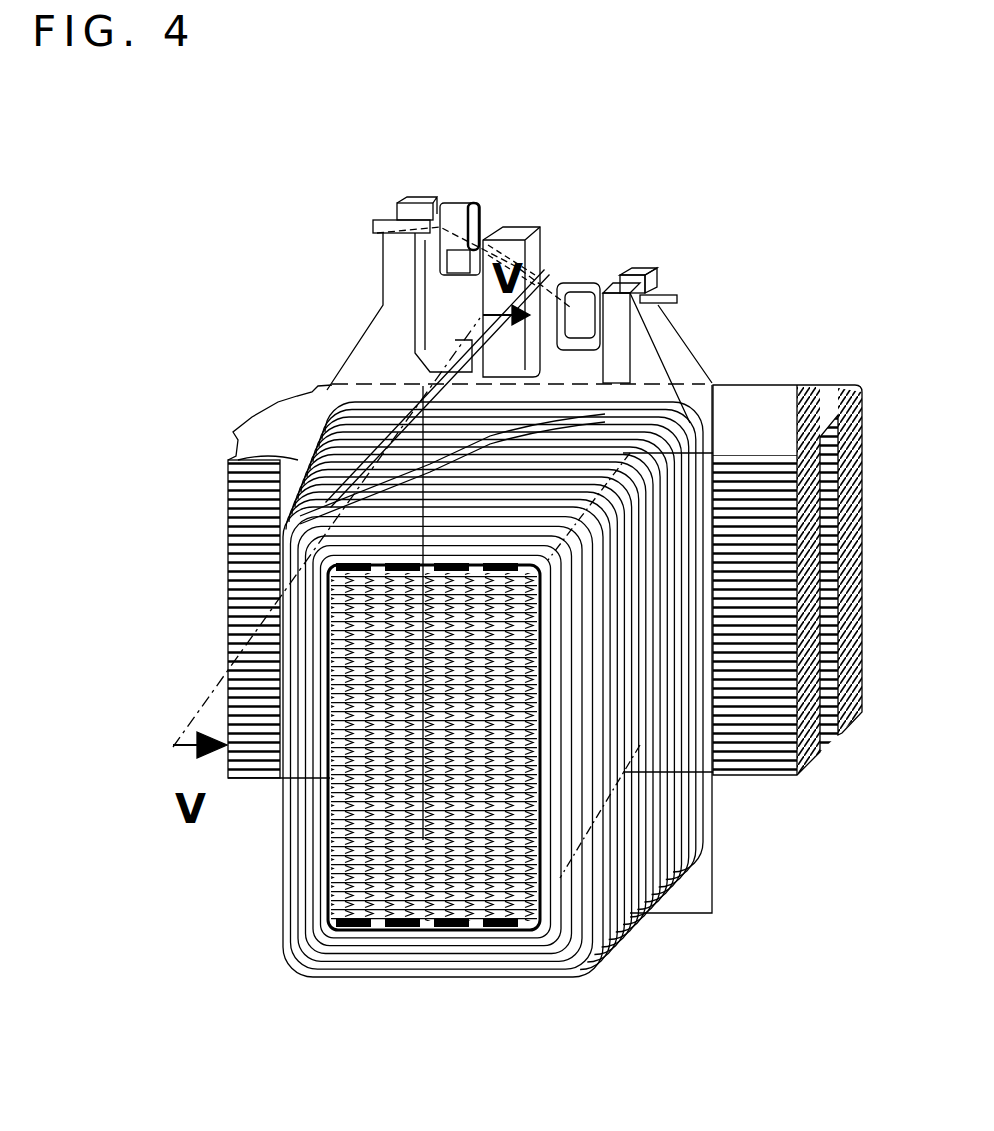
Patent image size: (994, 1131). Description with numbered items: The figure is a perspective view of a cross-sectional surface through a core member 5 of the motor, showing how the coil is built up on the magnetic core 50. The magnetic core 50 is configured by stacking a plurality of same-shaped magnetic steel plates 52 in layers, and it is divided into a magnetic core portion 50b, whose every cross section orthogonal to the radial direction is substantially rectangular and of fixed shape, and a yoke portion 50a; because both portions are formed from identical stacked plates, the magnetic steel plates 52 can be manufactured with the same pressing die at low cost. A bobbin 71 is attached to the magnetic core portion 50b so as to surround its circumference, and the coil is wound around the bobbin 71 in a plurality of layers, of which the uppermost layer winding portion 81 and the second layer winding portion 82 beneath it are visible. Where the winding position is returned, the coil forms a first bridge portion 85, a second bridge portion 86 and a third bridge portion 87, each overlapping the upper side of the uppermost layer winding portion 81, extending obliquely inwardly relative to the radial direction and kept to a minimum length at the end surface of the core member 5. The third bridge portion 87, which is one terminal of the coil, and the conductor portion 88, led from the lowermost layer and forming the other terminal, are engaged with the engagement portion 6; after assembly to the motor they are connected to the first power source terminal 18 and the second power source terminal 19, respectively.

The core member 5 is at (298, 331).
The engagement portion 6 is at (553, 262).
The first power source terminal 18 is at (480, 205).
The second power source terminal 19 is at (585, 290).
The magnetic core 50 is at (380, 903).
The yoke portion 50a is at (780, 400).
The magnetic core portion 50b is at (607, 903).
The magnetic steel plate 52 is at (447, 900).
The bobbin 71 is at (410, 937).
The uppermost layer winding portion 81 is at (235, 450).
The second layer winding portion 82 is at (250, 490).
The first bridge portion 85 is at (573, 453).
The second bridge portion 86 is at (712, 385).
The third bridge portion 87 is at (413, 390).
The conductor portion 88 is at (577, 417).